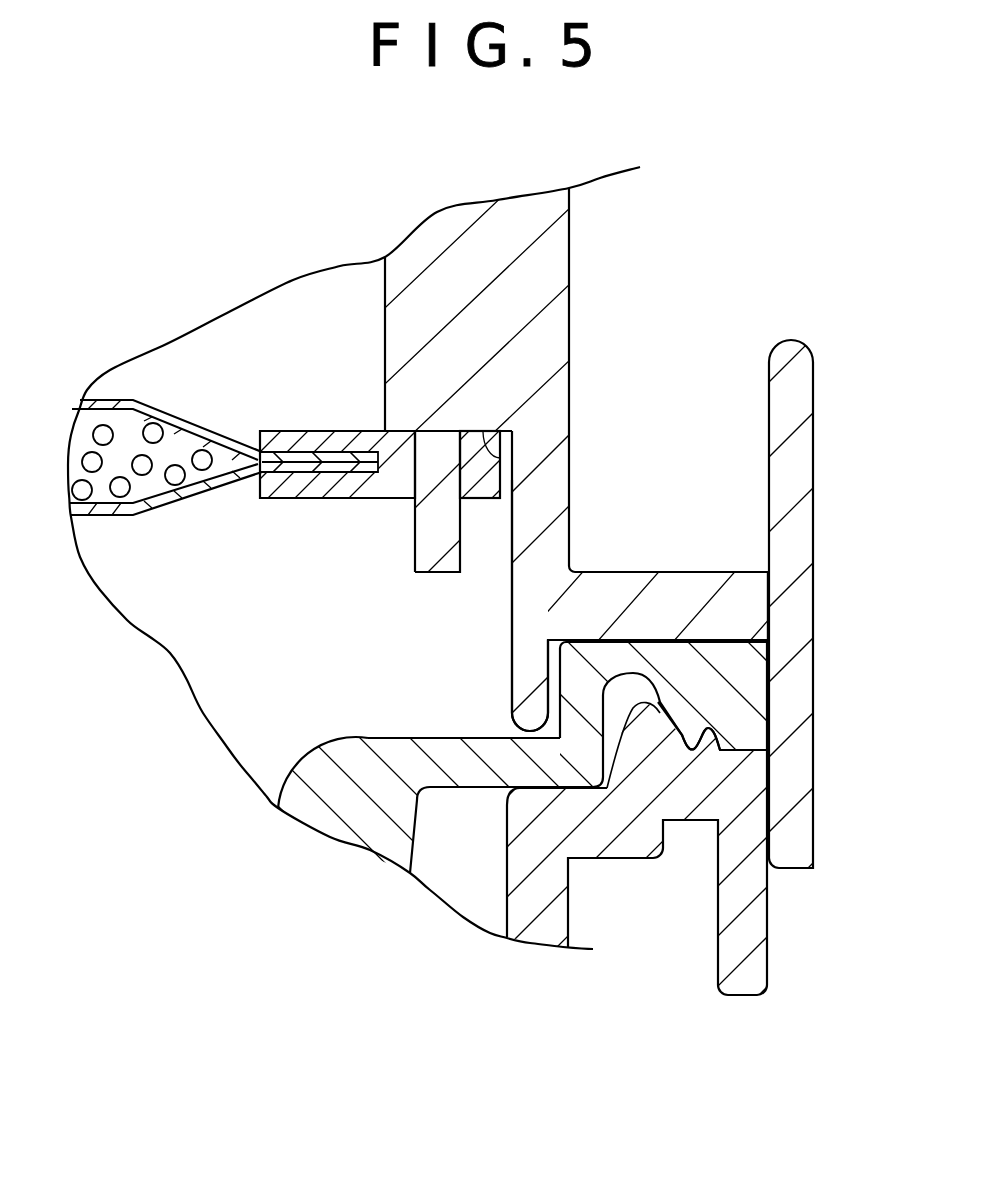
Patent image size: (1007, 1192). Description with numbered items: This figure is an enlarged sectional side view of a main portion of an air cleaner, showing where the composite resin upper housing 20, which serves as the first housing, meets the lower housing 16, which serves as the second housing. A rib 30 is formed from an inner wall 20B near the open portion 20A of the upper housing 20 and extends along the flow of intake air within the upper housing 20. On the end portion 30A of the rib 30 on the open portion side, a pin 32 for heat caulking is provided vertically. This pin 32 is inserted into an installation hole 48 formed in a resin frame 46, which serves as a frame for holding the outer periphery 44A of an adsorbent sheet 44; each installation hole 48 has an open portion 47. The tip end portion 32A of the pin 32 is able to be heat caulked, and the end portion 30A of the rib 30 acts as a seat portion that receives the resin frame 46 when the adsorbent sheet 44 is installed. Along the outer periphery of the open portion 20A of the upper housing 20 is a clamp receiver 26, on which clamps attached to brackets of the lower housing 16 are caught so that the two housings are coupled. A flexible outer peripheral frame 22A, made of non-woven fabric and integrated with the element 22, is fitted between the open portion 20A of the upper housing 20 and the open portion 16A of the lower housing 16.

The lower housing 16 is at (785, 917).
The open portion of the lower housing 16A is at (713, 780).
The upper housing 20 is at (596, 233).
The open portion of the upper housing 20A is at (743, 608).
The inner wall of the upper housing 20B is at (512, 653).
The element 22 is at (305, 750).
The outer peripheral frame 22A is at (753, 699).
The clamp receiver 26 is at (803, 457).
The rib 30 is at (385, 333).
The end portion of the rib 30A is at (500, 460).
The pin for heat caulking 32 is at (415, 527).
The tip end portion of the pin 32A is at (438, 572).
The adsorbent sheet 44 is at (153, 391).
The outer periphery of the adsorbent sheet 44A is at (310, 470).
The resin frame 46 is at (317, 430).
The open portion of the installation hole 47 is at (483, 498).
The installation hole 48 is at (420, 453).